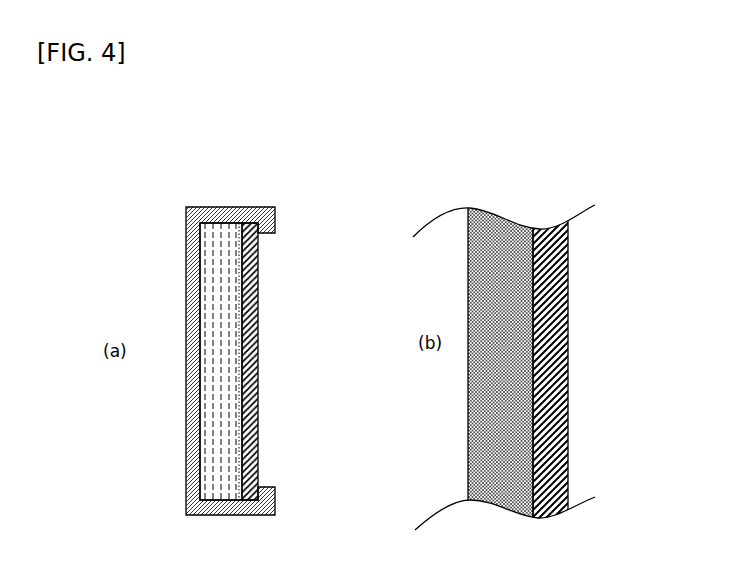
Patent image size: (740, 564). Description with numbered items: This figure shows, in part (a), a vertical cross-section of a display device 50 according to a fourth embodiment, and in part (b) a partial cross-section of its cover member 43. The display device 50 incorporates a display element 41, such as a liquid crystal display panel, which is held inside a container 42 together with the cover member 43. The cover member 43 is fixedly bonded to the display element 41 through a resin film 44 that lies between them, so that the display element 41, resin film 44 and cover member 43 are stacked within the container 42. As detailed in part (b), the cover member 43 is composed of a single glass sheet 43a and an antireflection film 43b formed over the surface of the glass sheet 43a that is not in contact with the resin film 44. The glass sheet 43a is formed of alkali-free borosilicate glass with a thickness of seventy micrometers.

The display device 50 is at (396, 338).
The display element 41 is at (210, 477).
The container 42 is at (252, 200).
The cover member 43 is at (258, 365).
The glass sheet 43a is at (507, 235).
The antireflection film 43b is at (568, 338).
The resin film 44 is at (238, 410).